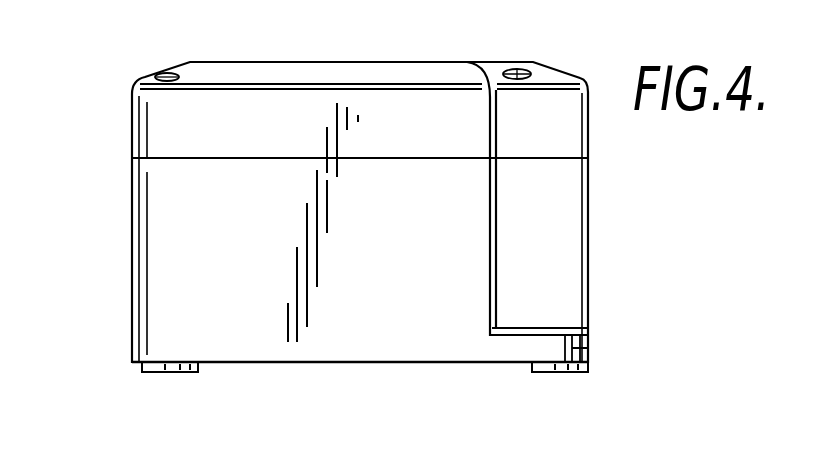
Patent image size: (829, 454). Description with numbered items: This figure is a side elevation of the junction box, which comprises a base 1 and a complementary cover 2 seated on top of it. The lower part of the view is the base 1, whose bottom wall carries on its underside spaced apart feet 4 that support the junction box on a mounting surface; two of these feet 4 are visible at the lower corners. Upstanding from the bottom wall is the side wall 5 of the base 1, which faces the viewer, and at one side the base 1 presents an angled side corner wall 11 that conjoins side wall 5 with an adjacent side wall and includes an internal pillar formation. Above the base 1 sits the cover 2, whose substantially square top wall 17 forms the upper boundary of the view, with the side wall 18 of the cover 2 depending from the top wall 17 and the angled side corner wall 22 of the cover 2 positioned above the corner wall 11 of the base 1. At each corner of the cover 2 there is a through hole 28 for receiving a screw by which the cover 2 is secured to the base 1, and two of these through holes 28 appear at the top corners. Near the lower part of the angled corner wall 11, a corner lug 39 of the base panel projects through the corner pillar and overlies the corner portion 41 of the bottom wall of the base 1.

The base 1 is at (378, 218).
The cover 2 is at (258, 112).
The feet 4 is at (153, 373).
The side wall 5 is at (378, 318).
The angled side corner wall 11 is at (543, 213).
The top wall 17 is at (428, 72).
The side wall 18 is at (375, 107).
The angled side corner wall 22 is at (553, 137).
The through hole 28 is at (166, 73).
The corner lug 39 is at (532, 330).
The corner portion 41 is at (593, 349).